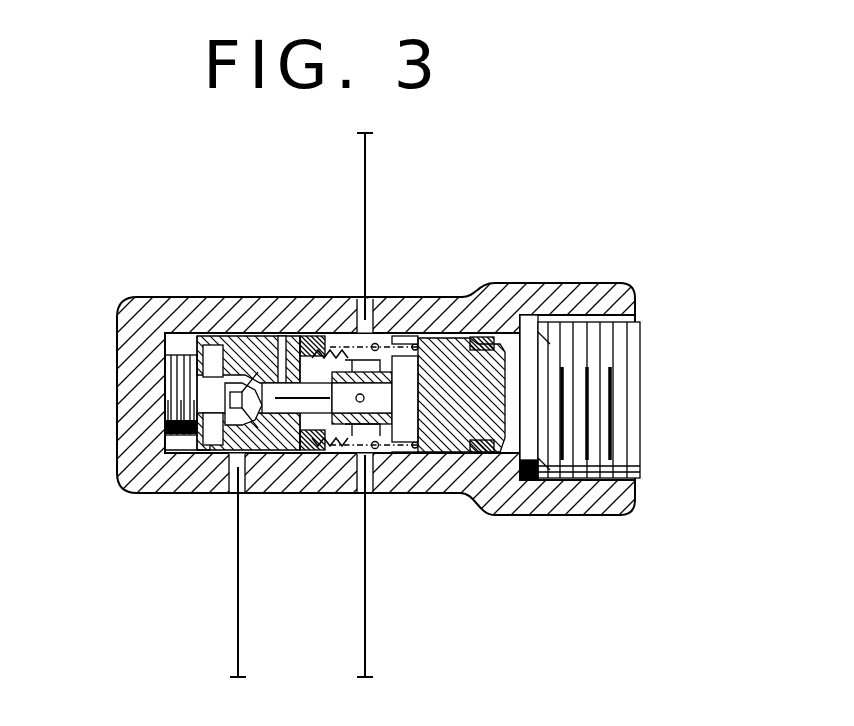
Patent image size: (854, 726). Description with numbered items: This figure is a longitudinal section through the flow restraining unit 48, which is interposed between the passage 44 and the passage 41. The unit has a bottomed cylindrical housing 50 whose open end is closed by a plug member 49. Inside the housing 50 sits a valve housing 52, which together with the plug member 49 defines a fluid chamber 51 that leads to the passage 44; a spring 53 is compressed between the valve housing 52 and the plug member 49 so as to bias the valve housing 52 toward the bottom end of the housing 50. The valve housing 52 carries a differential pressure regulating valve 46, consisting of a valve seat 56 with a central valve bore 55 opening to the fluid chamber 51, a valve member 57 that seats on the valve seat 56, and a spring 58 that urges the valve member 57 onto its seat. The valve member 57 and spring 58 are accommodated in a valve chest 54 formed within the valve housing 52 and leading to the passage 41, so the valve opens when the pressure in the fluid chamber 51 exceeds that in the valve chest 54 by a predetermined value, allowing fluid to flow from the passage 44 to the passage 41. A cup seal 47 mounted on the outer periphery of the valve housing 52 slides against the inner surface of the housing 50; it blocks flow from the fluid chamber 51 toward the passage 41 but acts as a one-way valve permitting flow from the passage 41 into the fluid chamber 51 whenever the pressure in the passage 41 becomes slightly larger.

The passage 41 is at (237, 586).
The passage 44 is at (366, 210).
The differential pressure regulating valve 46 is at (288, 313).
The cup seal 47 is at (318, 334).
The flow restraining unit 48 is at (514, 272).
The plug member 49 is at (617, 355).
The housing 50 is at (502, 496).
The fluid chamber 51 is at (401, 453).
The valve housing 52 is at (185, 446).
The spring 53 is at (407, 343).
The valve chest 54 is at (195, 378).
The valve bore 55 is at (285, 445).
The valve seat 56 is at (241, 362).
The valve member 57 is at (248, 410).
The spring 58 is at (208, 345).